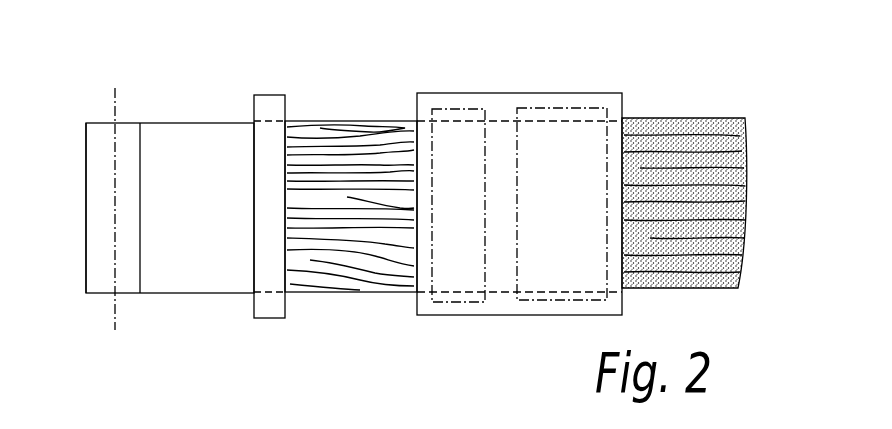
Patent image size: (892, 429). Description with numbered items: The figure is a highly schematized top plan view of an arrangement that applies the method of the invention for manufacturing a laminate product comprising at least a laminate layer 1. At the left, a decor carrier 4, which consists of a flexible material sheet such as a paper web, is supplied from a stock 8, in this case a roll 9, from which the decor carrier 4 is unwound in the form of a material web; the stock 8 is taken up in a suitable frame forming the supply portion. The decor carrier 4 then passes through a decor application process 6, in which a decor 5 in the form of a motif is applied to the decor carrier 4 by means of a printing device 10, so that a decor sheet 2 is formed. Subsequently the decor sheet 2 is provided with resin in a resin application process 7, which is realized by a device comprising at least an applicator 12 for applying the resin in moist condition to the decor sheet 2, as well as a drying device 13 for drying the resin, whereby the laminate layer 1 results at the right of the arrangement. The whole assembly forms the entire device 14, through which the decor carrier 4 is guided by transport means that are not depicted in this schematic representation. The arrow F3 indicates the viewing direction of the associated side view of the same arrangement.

The laminate layer 1 is at (693, 125).
The decor sheet 2 is at (349, 116).
The decor carrier 4 is at (175, 160).
The decor 5 is at (360, 247).
The decor application process 6 is at (260, 92).
The resin application process 7 is at (521, 88).
The stock 8 is at (130, 120).
The roll 9 is at (97, 285).
The printing device 10 is at (265, 302).
The applicator 12 is at (472, 108).
The drying device 13 is at (565, 108).
The entire device 14 is at (250, 356).
The direction of view of Fig. 3 F3 is at (333, 360).